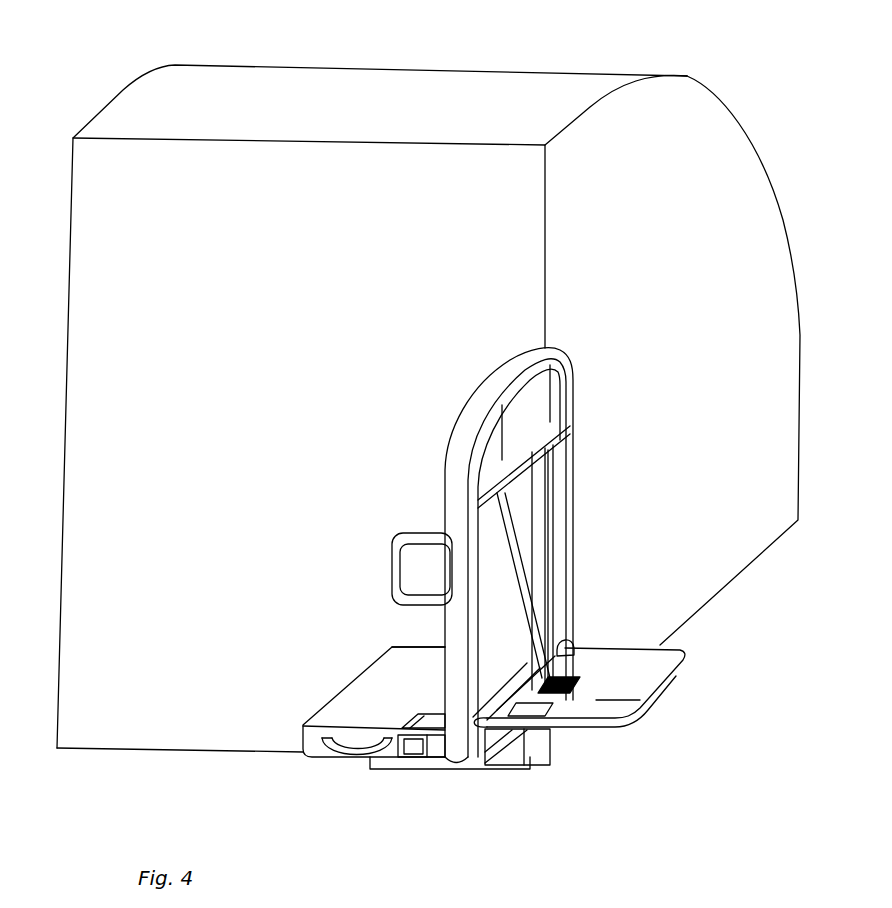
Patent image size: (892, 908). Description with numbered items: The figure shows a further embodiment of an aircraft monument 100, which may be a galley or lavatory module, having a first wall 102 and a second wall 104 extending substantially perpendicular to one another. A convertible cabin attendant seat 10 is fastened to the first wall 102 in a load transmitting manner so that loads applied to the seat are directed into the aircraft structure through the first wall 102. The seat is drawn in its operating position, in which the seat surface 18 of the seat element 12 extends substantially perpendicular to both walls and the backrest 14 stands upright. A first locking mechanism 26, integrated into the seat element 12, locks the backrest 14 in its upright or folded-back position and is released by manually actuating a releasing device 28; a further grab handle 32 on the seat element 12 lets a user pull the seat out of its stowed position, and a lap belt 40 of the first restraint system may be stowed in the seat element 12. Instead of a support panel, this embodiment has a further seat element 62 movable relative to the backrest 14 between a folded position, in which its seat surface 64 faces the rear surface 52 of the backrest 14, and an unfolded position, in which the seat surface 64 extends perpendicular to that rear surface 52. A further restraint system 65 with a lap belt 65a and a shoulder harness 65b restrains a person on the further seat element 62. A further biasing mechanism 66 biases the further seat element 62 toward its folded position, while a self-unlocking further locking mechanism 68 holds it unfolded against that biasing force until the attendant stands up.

The aircraft monument 100 is at (536, 52).
The first wall 102 is at (252, 163).
The second wall 104 is at (678, 98).
The convertible cabin attendant seat 10 is at (475, 320).
The backrest 14 is at (455, 470).
The rear surface 52 is at (562, 384).
The shoulder harness 65b is at (558, 478).
The further restraint system 65 is at (562, 562).
The lap belt 65a is at (637, 640).
The seat element 12 is at (352, 677).
The seat surface 18 is at (392, 647).
The lap belt 40 is at (440, 690).
The further grab handle 32 is at (335, 760).
The first locking mechanism 26 is at (427, 768).
The releasing device 28 is at (387, 773).
The further seat element 62 is at (685, 652).
The seat surface 64 is at (620, 697).
The further biasing mechanism 66 is at (573, 643).
The further locking mechanism 68 is at (483, 767).